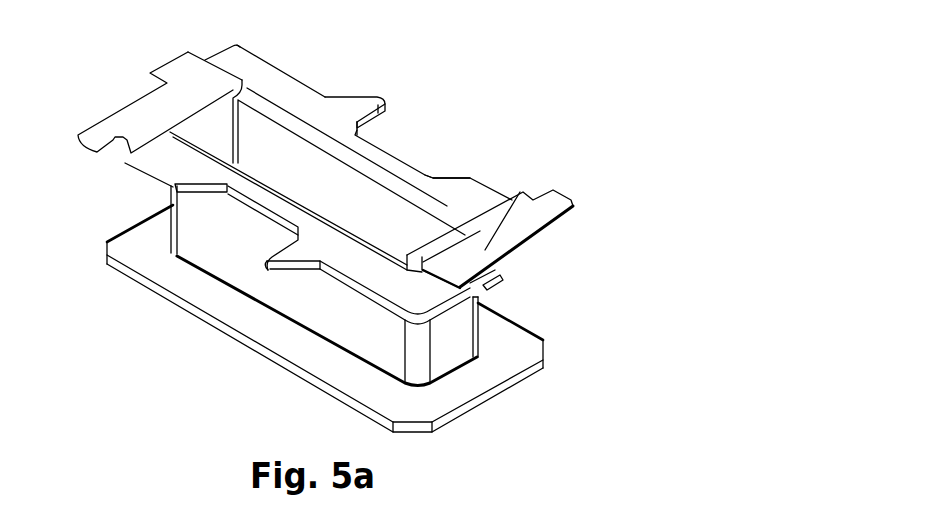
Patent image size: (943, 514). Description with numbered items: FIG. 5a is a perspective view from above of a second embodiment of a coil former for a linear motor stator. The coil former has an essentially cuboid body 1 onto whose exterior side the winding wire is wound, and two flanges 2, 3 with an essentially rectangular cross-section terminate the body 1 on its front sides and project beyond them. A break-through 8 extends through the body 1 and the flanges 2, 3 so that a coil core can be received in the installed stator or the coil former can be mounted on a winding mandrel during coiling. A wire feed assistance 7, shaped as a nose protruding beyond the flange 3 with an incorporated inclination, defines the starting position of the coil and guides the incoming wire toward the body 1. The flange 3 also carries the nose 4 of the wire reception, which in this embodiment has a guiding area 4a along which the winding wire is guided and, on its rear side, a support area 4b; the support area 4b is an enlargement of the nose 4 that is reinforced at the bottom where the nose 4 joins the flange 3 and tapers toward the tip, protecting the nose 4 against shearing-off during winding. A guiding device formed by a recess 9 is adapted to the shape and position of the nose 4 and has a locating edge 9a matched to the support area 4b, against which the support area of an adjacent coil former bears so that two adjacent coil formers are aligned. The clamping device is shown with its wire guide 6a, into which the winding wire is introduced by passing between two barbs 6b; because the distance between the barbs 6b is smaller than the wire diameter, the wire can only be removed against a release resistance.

The body 1 is at (240, 272).
The flange 2 is at (512, 333).
The flange 3 is at (268, 73).
The nose 4 is at (380, 100).
The guiding area 4a is at (278, 251).
The support area 4b is at (283, 255).
The wire guide 6a is at (503, 280).
The barb 6b is at (478, 300).
The wire feed assistance 7 is at (555, 200).
The break-through 8 is at (245, 127).
The recess 9 is at (407, 143).
The locating edge 9a is at (224, 186).